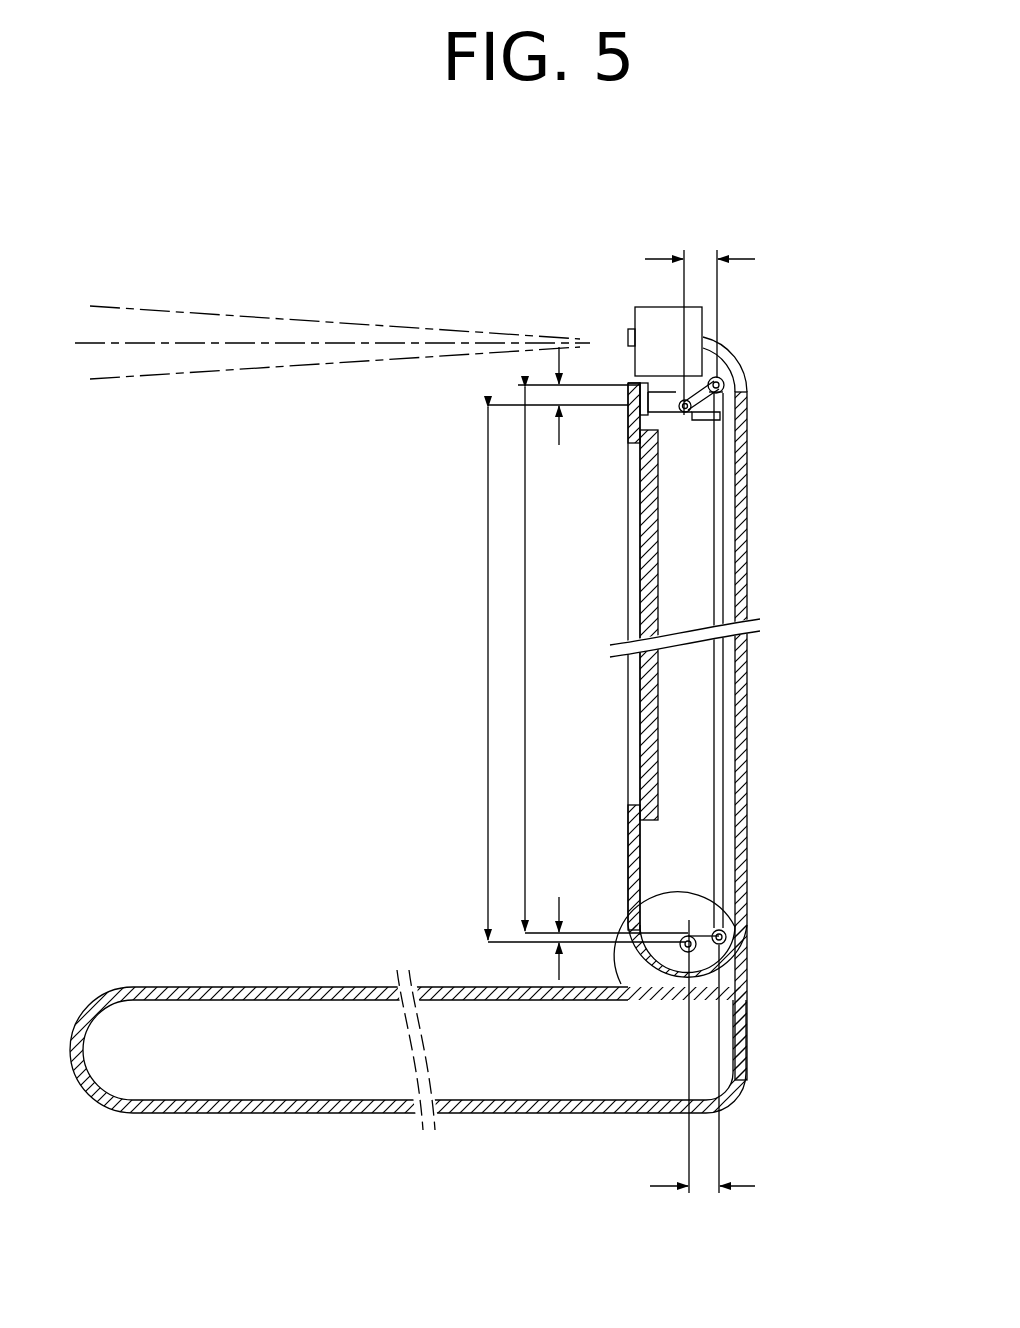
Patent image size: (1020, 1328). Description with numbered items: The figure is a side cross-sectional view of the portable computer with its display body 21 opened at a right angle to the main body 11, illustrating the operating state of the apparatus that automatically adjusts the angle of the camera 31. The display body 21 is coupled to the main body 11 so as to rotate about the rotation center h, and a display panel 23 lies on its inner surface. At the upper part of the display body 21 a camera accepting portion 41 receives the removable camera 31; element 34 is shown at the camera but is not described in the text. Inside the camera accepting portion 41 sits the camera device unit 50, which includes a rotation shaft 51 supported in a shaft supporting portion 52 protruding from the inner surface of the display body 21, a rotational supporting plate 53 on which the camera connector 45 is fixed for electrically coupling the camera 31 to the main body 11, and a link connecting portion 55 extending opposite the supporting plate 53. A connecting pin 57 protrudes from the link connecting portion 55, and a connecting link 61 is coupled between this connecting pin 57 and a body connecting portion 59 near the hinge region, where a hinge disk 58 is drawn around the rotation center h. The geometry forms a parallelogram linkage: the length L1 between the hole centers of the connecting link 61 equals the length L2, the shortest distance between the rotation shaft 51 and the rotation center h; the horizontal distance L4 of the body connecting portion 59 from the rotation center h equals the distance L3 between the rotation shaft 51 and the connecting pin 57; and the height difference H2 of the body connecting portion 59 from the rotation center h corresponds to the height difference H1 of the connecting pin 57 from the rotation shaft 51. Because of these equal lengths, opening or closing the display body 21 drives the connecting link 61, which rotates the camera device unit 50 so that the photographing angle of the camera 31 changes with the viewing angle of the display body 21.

The main body 11 is at (243, 982).
The display body 21 is at (753, 730).
The display panel 23 is at (659, 523).
The camera 31 is at (639, 301).
The lens tab 34 is at (630, 331).
The camera accepting portion 41 is at (737, 363).
The camera connector 45 is at (657, 393).
The camera device unit 50 is at (766, 393).
The rotation shaft 51 is at (692, 404).
The shaft supporting portion 52 is at (706, 416).
The supporting plate 53 is at (643, 410).
The link connecting portion 55 is at (718, 377).
The connecting pin 57 is at (723, 385).
The hinge disk 58 is at (688, 912).
The body connecting portion 59 is at (727, 936).
The connecting link 61 is at (720, 567).
The rotation center of the display body h is at (697, 948).
The length L1 is at (591, 659).
The length L2 is at (570, 673).
The distance L3 is at (700, 318).
The distance L4 is at (702, 1077).
The height difference H1 is at (576, 397).
The height difference H2 is at (541, 938).